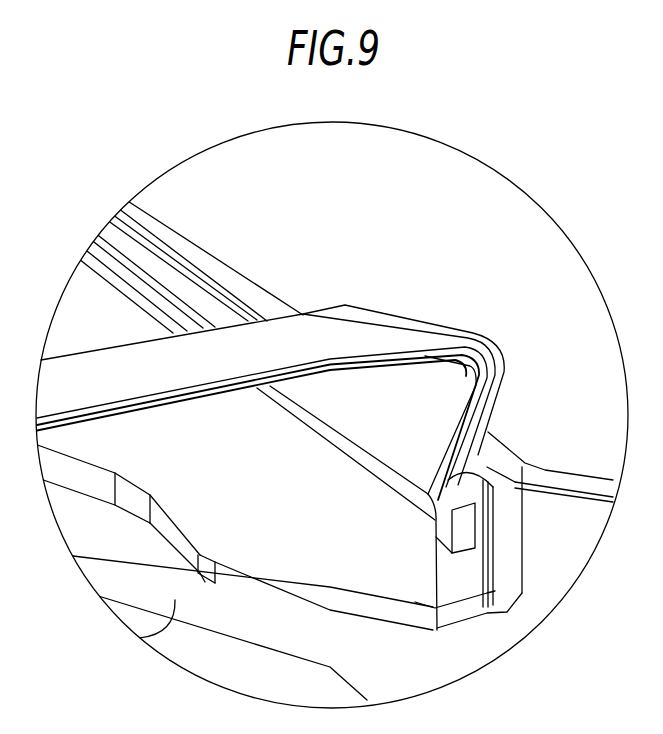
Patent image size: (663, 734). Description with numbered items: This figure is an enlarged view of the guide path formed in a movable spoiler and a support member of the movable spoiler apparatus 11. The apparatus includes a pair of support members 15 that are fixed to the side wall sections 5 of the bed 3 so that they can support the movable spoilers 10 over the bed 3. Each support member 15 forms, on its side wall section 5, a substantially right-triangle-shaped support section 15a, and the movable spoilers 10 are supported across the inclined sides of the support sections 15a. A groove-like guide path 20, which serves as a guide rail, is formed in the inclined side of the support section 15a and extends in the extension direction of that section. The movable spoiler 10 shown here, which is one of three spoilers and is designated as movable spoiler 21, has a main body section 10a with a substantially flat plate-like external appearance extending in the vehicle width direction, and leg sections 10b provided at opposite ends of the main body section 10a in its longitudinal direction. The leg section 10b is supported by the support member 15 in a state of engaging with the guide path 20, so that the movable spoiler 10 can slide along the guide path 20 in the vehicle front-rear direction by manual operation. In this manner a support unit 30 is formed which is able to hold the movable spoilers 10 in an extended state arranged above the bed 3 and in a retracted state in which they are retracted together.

The movable spoiler apparatus 11 is at (476, 203).
The guide path 20 is at (172, 280).
The support unit 30 is at (258, 255).
The support member 15 is at (258, 255).
The support section 15a is at (263, 283).
The movable spoiler 10 is at (279, 445).
The movable spoiler 21 is at (420, 314).
The main body section 10a is at (163, 390).
The leg section 10b is at (375, 442).
The side wall section 5 is at (550, 466).
The bed 3 is at (556, 500).